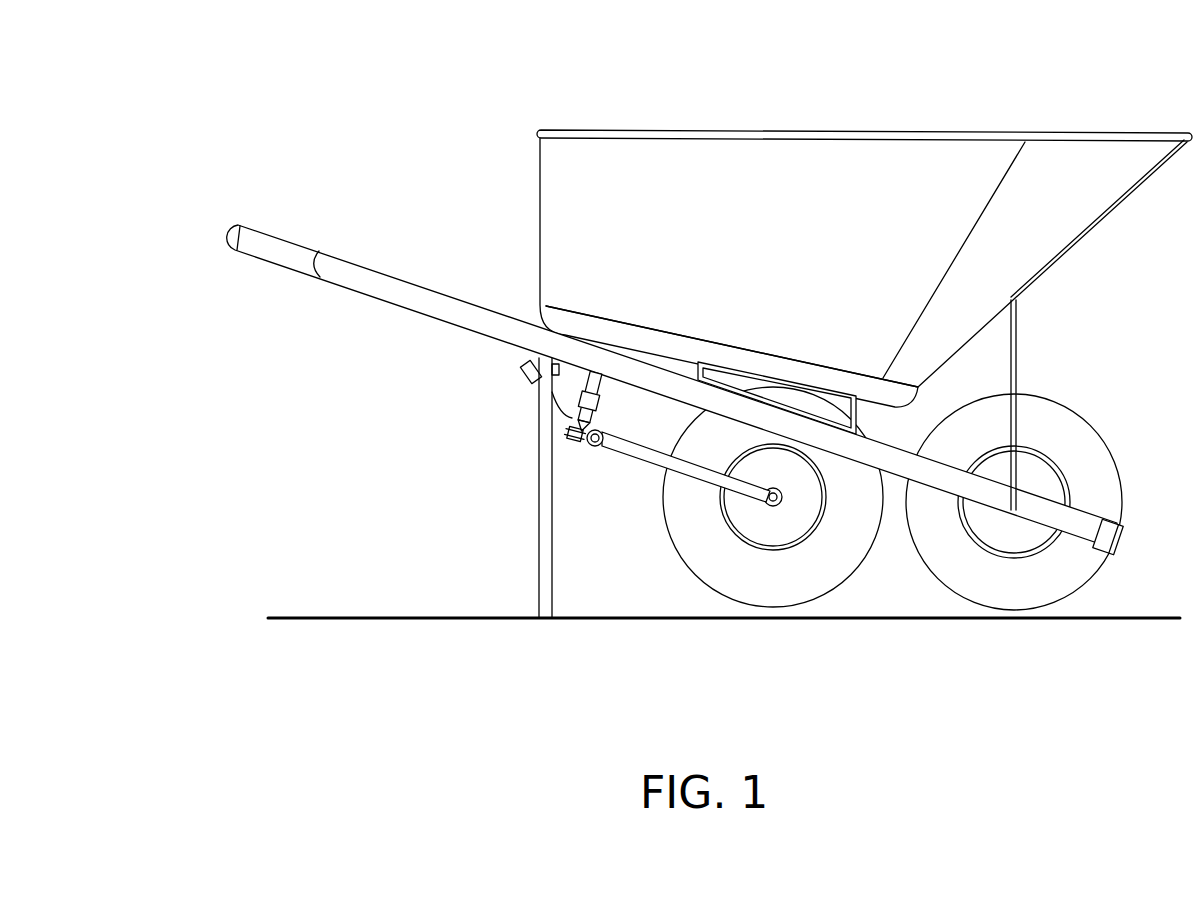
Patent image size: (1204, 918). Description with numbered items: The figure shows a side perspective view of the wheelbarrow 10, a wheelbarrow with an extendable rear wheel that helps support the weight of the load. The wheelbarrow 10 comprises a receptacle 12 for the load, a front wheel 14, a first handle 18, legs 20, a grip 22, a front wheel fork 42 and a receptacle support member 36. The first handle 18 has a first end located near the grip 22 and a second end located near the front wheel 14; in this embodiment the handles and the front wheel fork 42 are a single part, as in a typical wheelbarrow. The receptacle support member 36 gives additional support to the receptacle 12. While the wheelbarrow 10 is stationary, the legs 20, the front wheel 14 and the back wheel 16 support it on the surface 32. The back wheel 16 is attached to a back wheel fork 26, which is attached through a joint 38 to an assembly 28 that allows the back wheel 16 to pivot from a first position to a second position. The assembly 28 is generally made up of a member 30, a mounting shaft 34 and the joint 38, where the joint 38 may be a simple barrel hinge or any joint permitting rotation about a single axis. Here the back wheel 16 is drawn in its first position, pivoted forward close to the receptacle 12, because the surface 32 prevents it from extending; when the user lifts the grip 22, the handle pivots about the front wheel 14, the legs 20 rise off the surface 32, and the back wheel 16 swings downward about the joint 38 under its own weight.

The wheelbarrow 10 is at (412, 192).
The receptacle 12 is at (775, 200).
The front wheel 14 is at (1088, 453).
The back wheel 16 is at (815, 570).
The first handle 18 is at (418, 300).
The legs 20 is at (538, 508).
The grip 22 is at (282, 248).
The back wheel fork 26 is at (665, 465).
The assembly 28 is at (573, 458).
The member 30 is at (525, 372).
The surface 32 is at (355, 608).
The mounting shaft 34 is at (600, 390).
The receptacle support member 36 is at (1019, 345).
The joint 38 is at (597, 447).
The front wheel fork 42 is at (1065, 512).